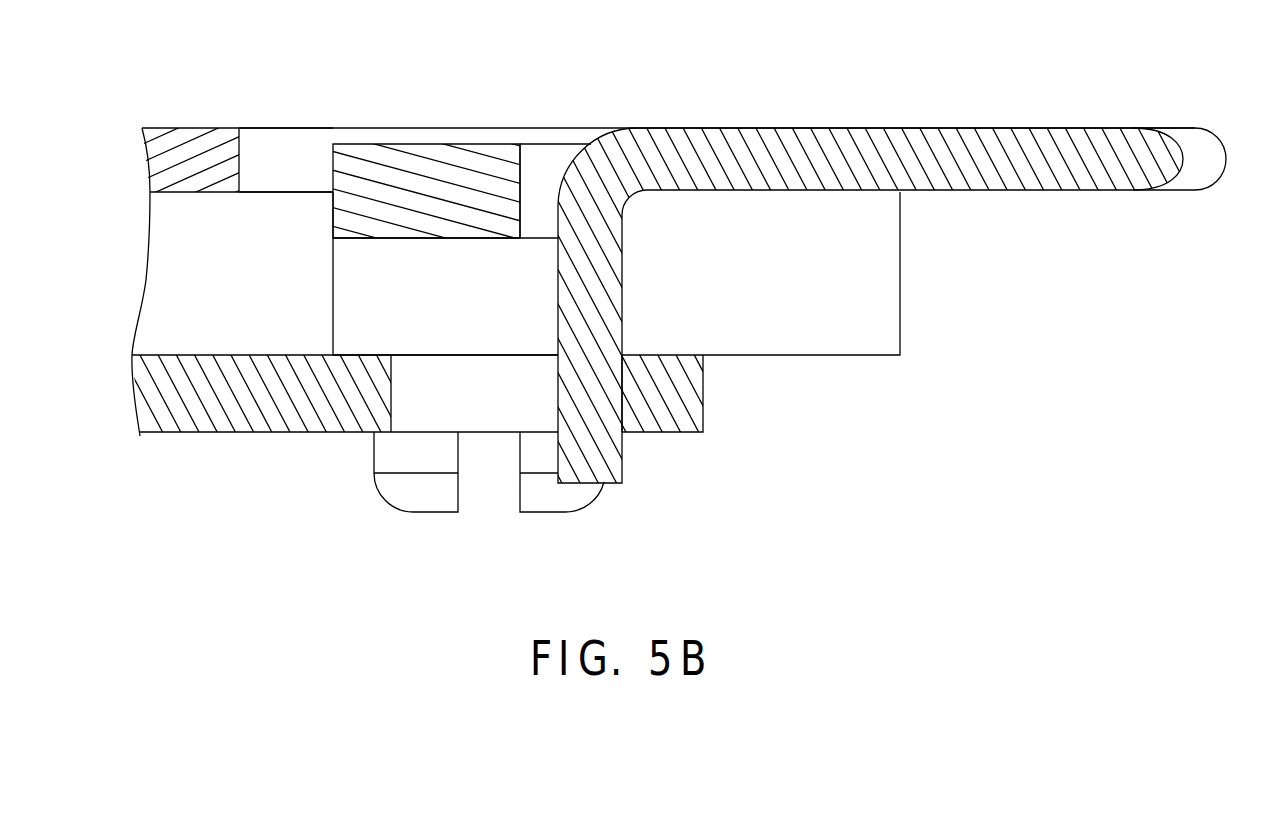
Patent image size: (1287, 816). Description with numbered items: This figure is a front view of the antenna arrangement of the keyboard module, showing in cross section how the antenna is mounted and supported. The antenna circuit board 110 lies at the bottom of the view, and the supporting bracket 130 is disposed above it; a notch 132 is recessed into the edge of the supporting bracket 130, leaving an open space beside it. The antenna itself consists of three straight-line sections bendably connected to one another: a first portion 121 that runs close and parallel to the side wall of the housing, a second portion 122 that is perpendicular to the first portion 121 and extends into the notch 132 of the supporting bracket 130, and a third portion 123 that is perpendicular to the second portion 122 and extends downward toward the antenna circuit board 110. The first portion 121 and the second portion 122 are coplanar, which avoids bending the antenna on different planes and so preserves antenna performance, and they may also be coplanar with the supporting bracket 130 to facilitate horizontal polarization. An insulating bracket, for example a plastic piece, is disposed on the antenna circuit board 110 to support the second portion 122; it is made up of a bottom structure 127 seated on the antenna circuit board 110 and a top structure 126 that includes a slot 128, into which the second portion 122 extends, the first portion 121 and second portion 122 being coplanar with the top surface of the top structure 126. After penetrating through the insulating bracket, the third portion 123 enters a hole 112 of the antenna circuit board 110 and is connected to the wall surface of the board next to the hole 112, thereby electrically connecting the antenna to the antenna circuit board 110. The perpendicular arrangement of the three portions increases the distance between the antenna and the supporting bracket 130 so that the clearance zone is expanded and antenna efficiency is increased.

The antenna circuit board 110 is at (643, 310).
The hole 112 is at (703, 427).
The first portion 121 is at (1203, 115).
The second portion 122 is at (819, 270).
The third portion 123 is at (847, 305).
The top structure 126 is at (432, 159).
The bottom structure 127 is at (431, 198).
The slot 128 is at (565, 139).
The supporting bracket 130 is at (190, 141).
The notch 132 is at (281, 116).